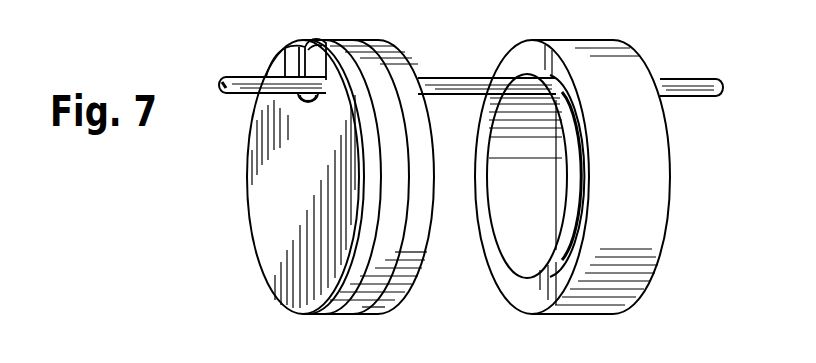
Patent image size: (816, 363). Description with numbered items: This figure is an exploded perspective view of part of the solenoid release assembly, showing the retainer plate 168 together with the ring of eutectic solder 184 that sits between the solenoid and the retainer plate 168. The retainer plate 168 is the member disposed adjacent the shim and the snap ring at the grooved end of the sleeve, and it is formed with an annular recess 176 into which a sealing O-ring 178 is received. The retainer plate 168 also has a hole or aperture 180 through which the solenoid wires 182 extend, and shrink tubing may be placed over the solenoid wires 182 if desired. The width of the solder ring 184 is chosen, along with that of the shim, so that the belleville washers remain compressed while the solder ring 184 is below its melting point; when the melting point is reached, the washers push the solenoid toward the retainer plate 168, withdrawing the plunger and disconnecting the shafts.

The retainer plate 168 is at (280, 227).
The annular recess 176 is at (313, 47).
The sealing O-ring 178 is at (320, 40).
The hole or aperture 180 is at (302, 102).
The solenoid wires 182 is at (249, 75).
The ring of eutectic solder 184 is at (645, 63).